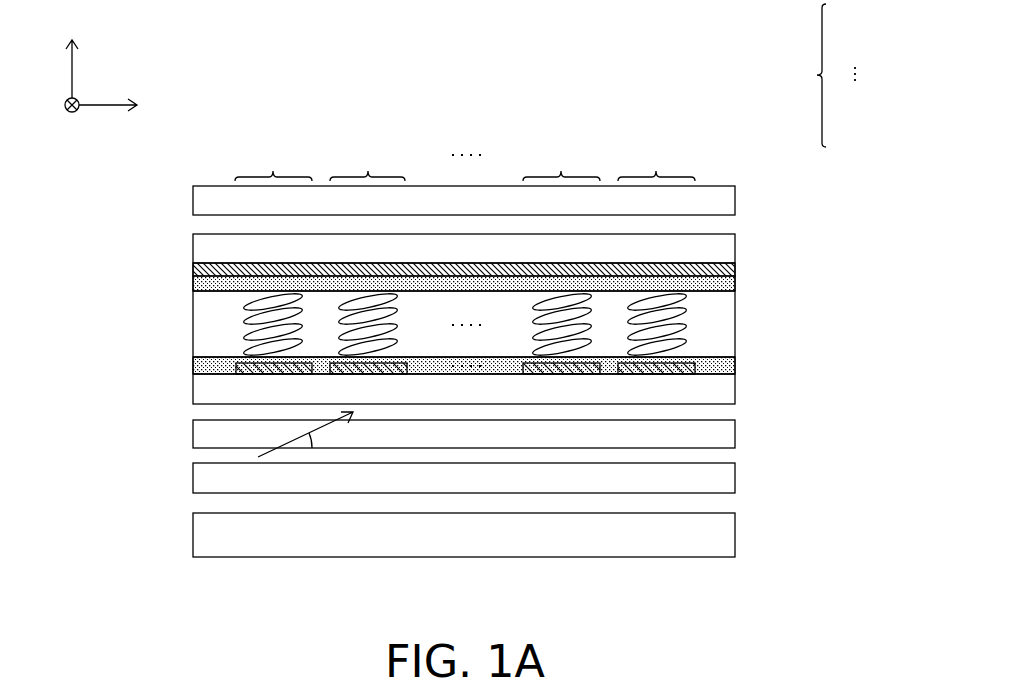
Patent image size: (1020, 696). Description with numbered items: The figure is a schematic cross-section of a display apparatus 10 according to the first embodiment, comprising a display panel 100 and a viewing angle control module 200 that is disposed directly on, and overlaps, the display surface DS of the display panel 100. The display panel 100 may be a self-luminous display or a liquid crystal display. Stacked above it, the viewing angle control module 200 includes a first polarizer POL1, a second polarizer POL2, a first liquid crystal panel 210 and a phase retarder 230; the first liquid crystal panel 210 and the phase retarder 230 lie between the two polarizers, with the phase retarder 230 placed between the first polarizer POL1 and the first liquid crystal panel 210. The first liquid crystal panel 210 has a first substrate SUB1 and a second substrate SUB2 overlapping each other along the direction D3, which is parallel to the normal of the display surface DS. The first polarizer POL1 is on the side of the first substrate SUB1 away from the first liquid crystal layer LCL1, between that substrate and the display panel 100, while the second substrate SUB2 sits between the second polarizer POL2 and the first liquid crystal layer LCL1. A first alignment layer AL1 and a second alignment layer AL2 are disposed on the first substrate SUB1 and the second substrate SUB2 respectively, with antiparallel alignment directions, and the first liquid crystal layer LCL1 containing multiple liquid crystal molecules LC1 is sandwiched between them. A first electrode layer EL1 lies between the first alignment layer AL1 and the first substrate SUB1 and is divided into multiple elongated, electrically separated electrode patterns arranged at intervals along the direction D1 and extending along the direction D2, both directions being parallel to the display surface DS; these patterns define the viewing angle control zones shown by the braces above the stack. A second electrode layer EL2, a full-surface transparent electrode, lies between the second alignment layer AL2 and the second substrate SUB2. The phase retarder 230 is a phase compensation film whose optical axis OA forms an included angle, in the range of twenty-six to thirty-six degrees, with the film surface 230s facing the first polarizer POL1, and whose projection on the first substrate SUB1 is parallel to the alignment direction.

The display apparatus 10 is at (880, 610).
The display panel 100 is at (707, 537).
The viewing angle control module 200 is at (74, 187).
The first liquid crystal panel 210 is at (126, 235).
The phase retarder 230 is at (707, 433).
The film surface 230s is at (230, 458).
The first polarizer POL1 is at (707, 478).
The second polarizer POL2 is at (713, 200).
The first substrate SUB1 is at (715, 395).
The second substrate SUB2 is at (713, 247).
The first electrode layer EL1 is at (844, 75).
The second electrode layer EL2 is at (713, 270).
The first alignment layer AL1 is at (707, 360).
The second alignment layer AL2 is at (713, 285).
The first liquid crystal layer LCL1 is at (713, 312).
The liquid crystal molecules LC1 is at (250, 320).
The optical axis OA is at (292, 446).
The display surface DS is at (230, 505).
The direction D1 is at (124, 108).
The direction D2 is at (56, 108).
The direction D3 is at (74, 56).